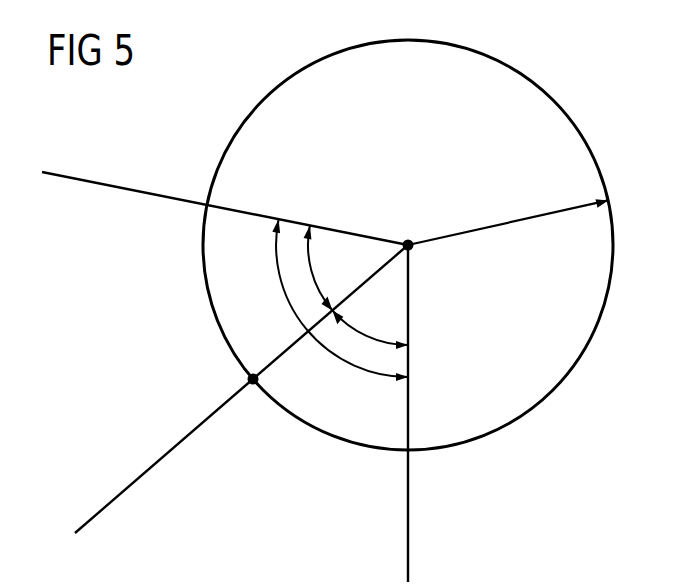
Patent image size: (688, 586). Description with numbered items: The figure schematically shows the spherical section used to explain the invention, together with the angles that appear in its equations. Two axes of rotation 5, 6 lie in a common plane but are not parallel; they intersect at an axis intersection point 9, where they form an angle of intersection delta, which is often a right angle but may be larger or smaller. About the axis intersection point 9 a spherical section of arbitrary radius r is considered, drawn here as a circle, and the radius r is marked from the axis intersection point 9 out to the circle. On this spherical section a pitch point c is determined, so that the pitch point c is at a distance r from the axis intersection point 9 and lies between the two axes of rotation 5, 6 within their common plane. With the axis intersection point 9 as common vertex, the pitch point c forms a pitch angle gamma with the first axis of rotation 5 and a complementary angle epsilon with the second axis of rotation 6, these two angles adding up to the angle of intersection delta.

The first axis of rotation 5 is at (94, 182).
The axis intersection point 9 is at (408, 240).
The second axis of rotation 6 is at (410, 527).
The radius r is at (508, 218).
The pitch point c is at (253, 385).